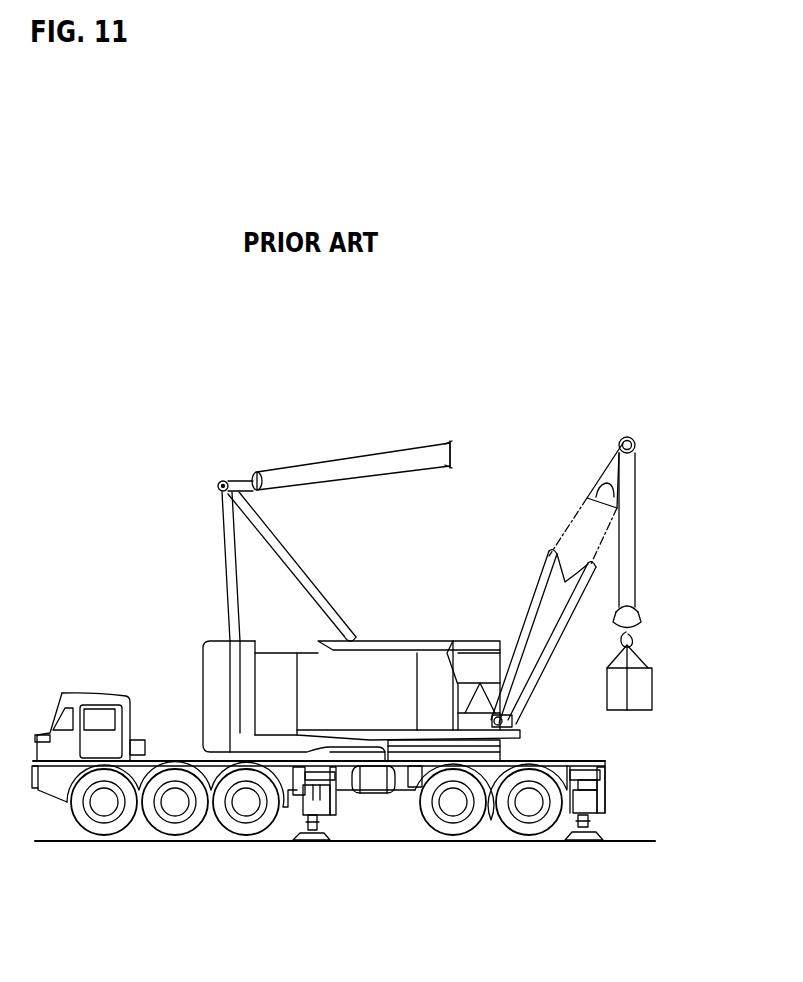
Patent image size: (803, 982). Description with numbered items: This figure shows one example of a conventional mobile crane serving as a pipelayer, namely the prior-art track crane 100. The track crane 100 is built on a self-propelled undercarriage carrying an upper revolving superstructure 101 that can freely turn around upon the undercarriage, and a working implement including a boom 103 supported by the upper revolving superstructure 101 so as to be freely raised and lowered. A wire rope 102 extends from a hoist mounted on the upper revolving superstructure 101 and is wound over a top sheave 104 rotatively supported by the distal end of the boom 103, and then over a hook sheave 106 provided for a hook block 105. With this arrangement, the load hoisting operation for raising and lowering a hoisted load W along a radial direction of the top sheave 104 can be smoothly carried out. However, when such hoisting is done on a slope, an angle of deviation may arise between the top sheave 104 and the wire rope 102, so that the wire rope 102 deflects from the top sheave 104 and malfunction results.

The track crane 100 is at (363, 430).
The upper revolving superstructure 101 is at (428, 612).
The wire rope 102 is at (638, 513).
The boom 103 is at (600, 472).
The top sheave 104 is at (632, 438).
The hook block 105 is at (637, 630).
The hook sheave 106 is at (629, 611).
The hoisted load W is at (607, 697).